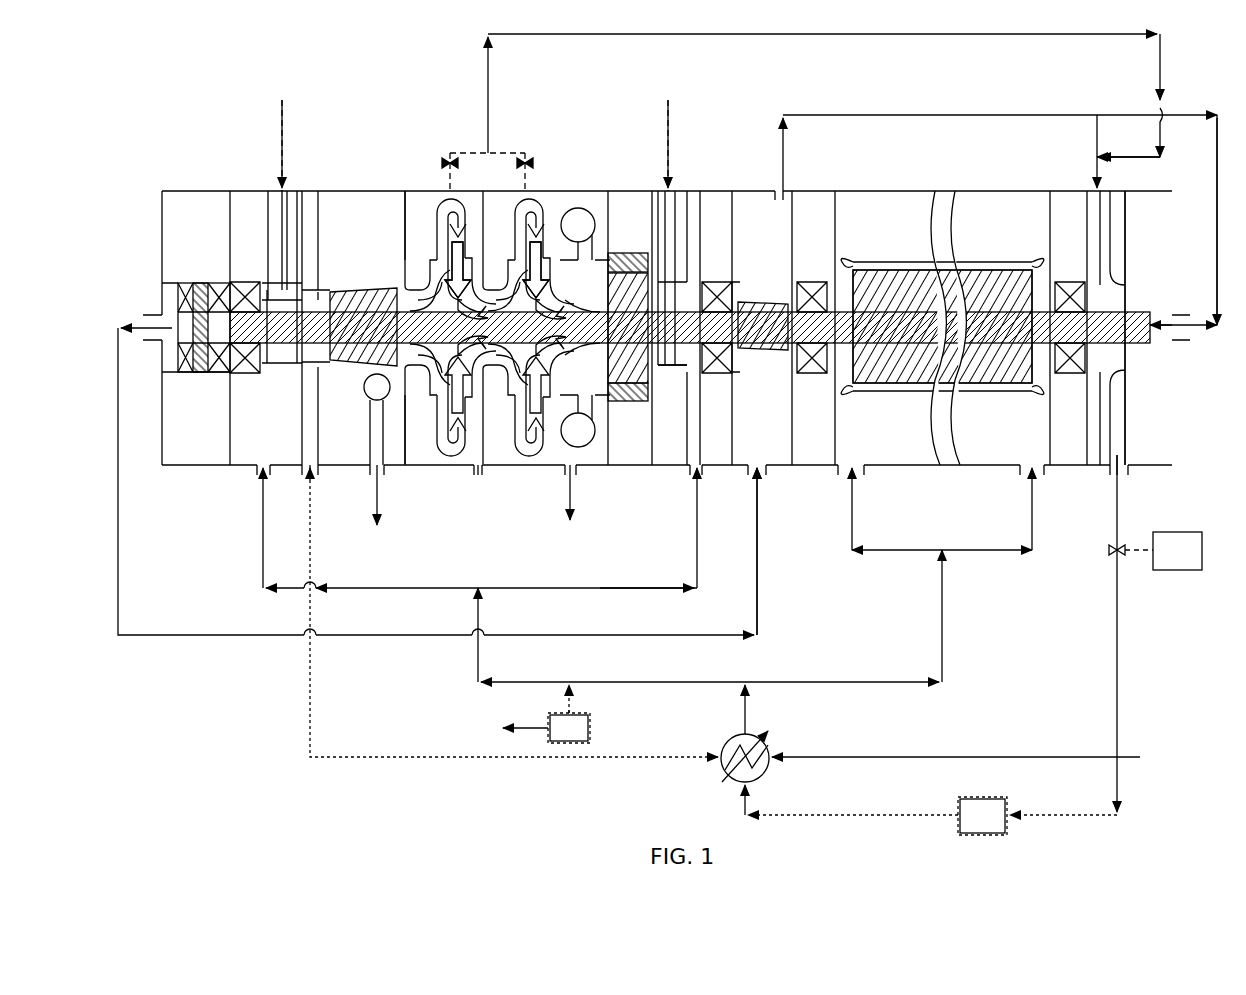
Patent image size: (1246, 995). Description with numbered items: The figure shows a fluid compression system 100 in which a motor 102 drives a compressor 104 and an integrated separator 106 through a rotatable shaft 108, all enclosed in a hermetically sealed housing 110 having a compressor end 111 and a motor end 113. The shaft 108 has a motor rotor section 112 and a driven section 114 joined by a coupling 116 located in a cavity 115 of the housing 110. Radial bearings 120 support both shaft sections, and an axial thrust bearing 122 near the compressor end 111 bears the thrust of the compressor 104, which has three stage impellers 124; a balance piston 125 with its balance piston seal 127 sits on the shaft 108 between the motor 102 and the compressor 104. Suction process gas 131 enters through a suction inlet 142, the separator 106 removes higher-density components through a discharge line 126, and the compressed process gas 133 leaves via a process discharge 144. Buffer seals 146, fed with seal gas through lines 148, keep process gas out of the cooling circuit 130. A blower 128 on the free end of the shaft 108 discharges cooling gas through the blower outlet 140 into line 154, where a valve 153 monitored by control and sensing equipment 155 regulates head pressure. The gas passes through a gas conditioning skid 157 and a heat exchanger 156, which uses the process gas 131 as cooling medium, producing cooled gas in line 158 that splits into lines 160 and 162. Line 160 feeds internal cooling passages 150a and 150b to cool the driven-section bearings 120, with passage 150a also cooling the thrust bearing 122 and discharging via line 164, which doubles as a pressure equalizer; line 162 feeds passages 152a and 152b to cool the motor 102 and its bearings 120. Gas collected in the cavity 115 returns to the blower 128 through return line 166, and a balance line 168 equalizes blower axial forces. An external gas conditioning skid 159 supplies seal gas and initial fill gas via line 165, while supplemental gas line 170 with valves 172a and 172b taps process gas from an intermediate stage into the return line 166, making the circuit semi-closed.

The fluid compression system 100 is at (893, 70).
The motor 102 is at (1010, 339).
The compressor 104 is at (487, 470).
The integrated separator 106 is at (345, 290).
The rotatable shaft 108 is at (836, 282).
The housing 110 is at (890, 192).
The compressor end 111 is at (160, 455).
The motor rotor section 112 is at (1150, 345).
The motor end 113 is at (1160, 415).
The driven section 114 is at (697, 470).
The cavity 115 is at (778, 252).
The coupling 116 is at (755, 350).
The radial bearings 120 is at (235, 282).
The axial thrust bearing 122 is at (178, 292).
The compressor stage impellers 124 is at (550, 285).
The balance piston 125 is at (628, 402).
The discharge line 126 is at (380, 500).
The balance piston seal 127 is at (628, 252).
The blower 128 is at (1125, 298).
The cooling circuit 130 is at (895, 710).
The process gas 131 is at (312, 690).
The compressed process gas 133 is at (595, 510).
The blower outlet 140 is at (1130, 477).
The suction inlet 142 is at (322, 470).
The process discharge 144 is at (560, 500).
The buffer seals 146 is at (318, 270).
The seal gas lines 148 is at (282, 120).
The internal cooling passage 150a is at (250, 478).
The internal cooling passage 150b is at (678, 478).
The internal cooling passage 152a is at (825, 480).
The internal cooling passage 152b is at (1070, 470).
The valve 153 is at (1115, 550).
The line 154 is at (1125, 515).
The control and sensing equipment 155 is at (1193, 562).
The heat exchanger 156 is at (770, 780).
The gas conditioning skid 157 is at (997, 826).
The line 158 is at (760, 720).
The external gas conditioning skid 159 is at (513, 714).
The line 160 is at (640, 680).
The line 162 is at (797, 680).
The line 164 is at (120, 527).
The line 165 is at (590, 722).
The return line 166 is at (1020, 112).
The balance line 168 is at (1217, 162).
The supplemental gas line 170 is at (488, 70).
The valve 172a is at (448, 160).
The valve 172b is at (528, 160).